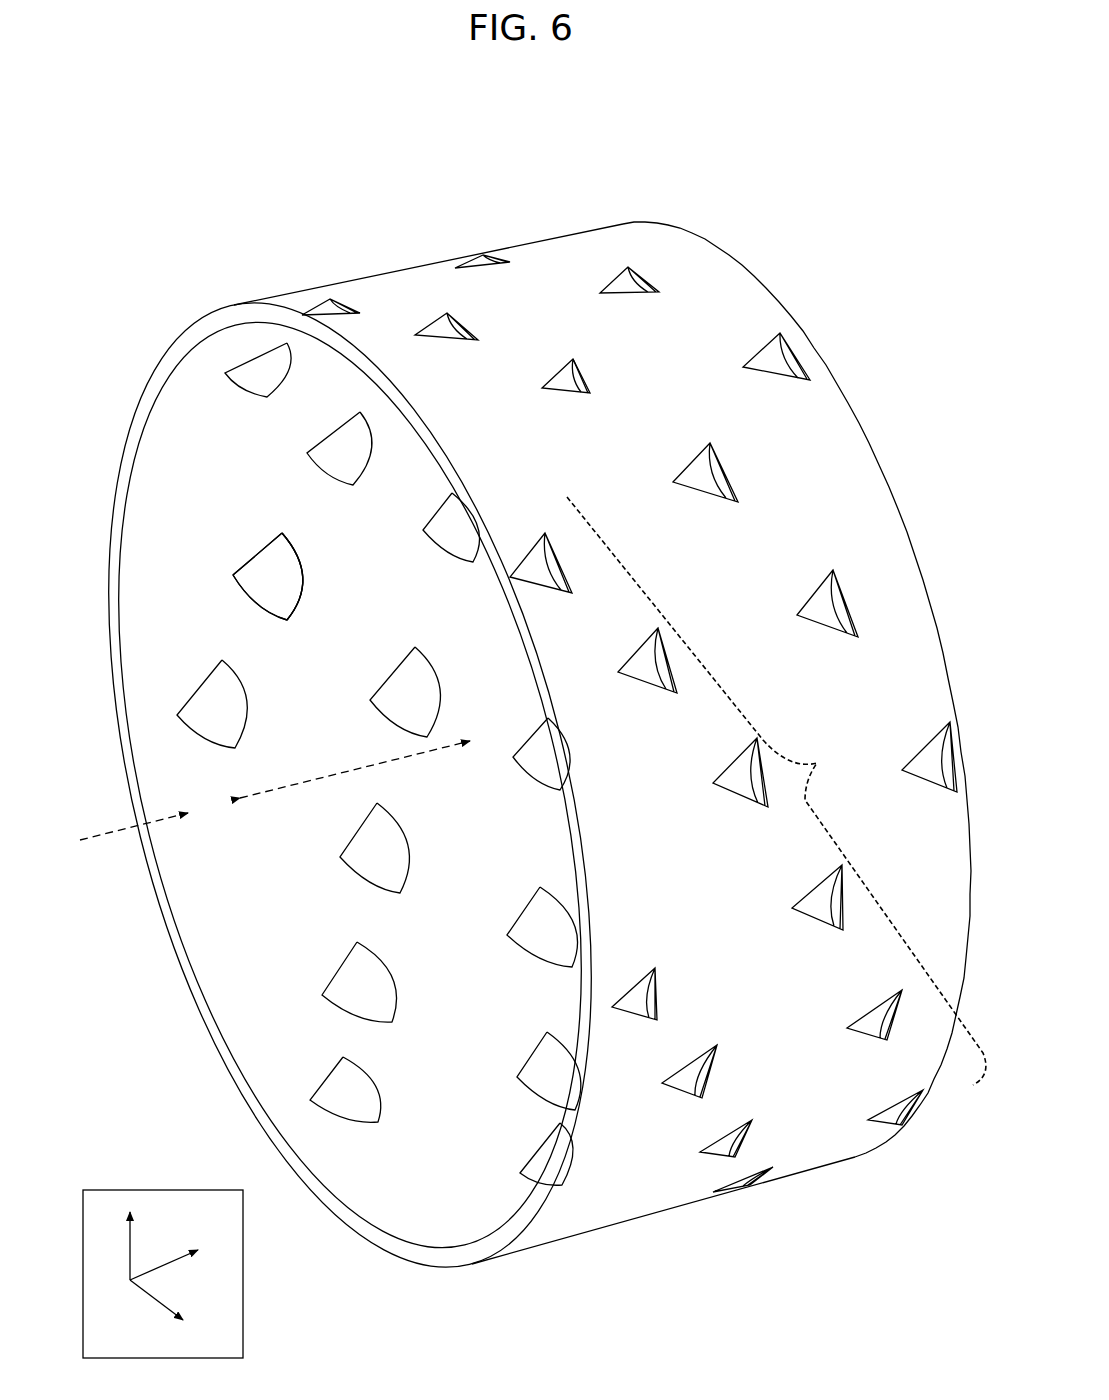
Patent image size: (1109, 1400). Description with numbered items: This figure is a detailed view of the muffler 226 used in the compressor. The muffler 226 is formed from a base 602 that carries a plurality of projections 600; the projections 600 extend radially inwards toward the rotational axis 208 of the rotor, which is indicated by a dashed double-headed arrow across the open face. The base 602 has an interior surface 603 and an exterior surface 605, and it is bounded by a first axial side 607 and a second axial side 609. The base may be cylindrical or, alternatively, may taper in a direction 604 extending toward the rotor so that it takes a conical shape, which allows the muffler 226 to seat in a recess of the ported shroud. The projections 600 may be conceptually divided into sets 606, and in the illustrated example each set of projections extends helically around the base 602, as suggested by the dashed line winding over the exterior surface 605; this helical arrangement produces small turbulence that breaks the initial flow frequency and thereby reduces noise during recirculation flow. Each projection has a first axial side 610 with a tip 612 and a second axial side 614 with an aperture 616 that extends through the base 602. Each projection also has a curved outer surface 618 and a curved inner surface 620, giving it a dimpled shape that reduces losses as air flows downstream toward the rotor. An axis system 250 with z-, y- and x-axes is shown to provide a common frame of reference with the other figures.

The muffler 226 is at (940, 183).
The first axial side 607 is at (132, 330).
The second axial side 609 is at (895, 377).
The base 602 is at (873, 551).
The curved outer surface 618 is at (577, 387).
The aperture 616 is at (580, 399).
The exterior surface 605 is at (802, 508).
The first axial side 610 is at (222, 581).
The second axial side 614 is at (303, 568).
The tip 612 is at (262, 586).
The curved inner surface 620 is at (282, 604).
The interior surface 603 is at (493, 893).
The projections 600 is at (528, 969).
The rotational axis 208 is at (318, 778).
The direction 604 is at (108, 822).
The sets 606 is at (776, 791).
The axis system 250 is at (180, 1190).